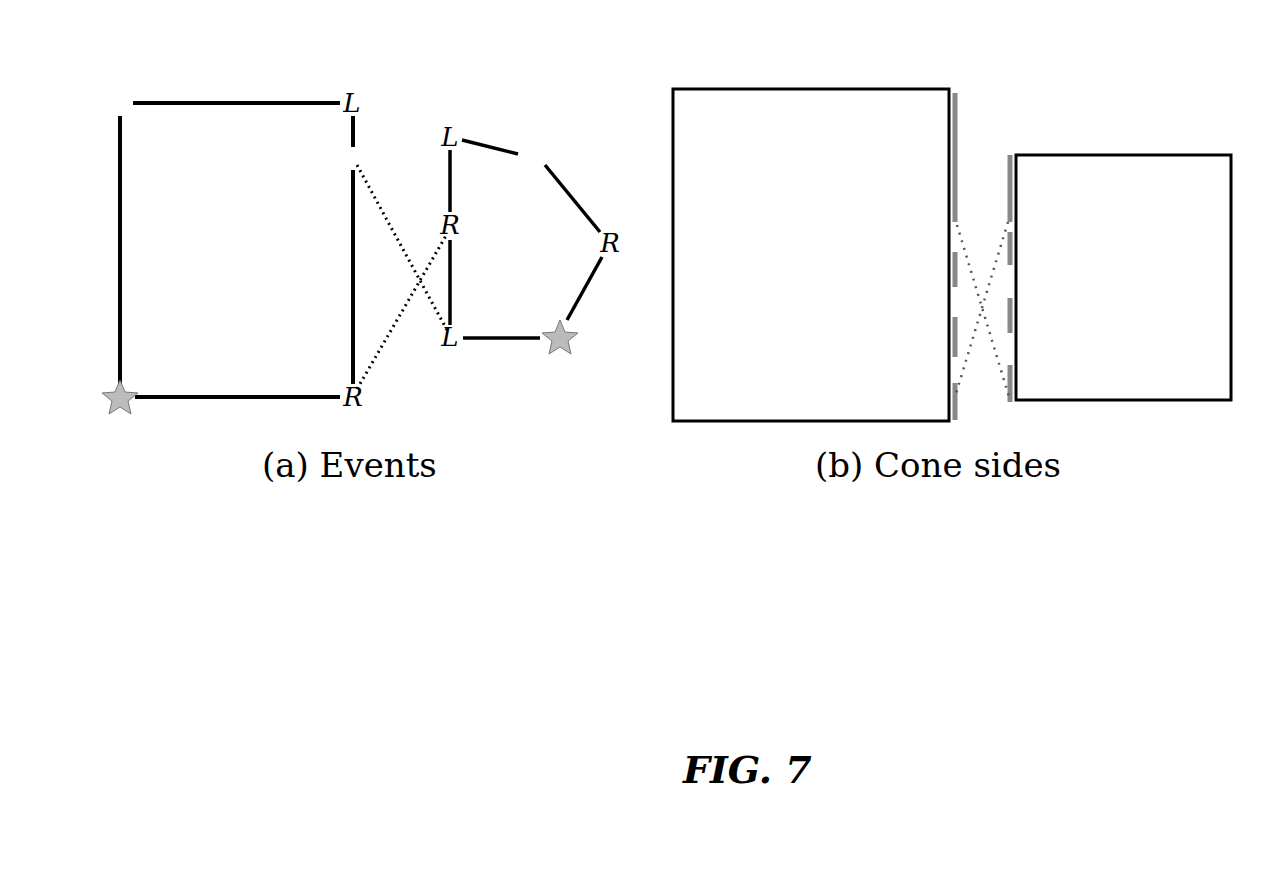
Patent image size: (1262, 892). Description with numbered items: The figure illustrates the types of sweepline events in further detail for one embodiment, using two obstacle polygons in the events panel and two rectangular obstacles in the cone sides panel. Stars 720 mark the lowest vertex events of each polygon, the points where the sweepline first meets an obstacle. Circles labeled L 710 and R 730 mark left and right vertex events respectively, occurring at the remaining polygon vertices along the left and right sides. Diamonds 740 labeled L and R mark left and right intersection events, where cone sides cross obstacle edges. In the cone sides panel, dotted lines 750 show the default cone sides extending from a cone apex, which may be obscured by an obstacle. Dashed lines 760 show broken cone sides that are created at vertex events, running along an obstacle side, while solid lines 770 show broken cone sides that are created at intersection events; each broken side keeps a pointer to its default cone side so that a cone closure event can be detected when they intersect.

The left vertex event 710 is at (116, 92).
The lowest vertex event 720 is at (134, 386).
The right vertex event 730 is at (530, 138).
The intersection event 740 is at (362, 147).
The default cone sides 750 is at (988, 290).
The broken cone sides created at vertex events 760 is at (1010, 152).
The broken cone sides created at intersection events 770 is at (955, 93).